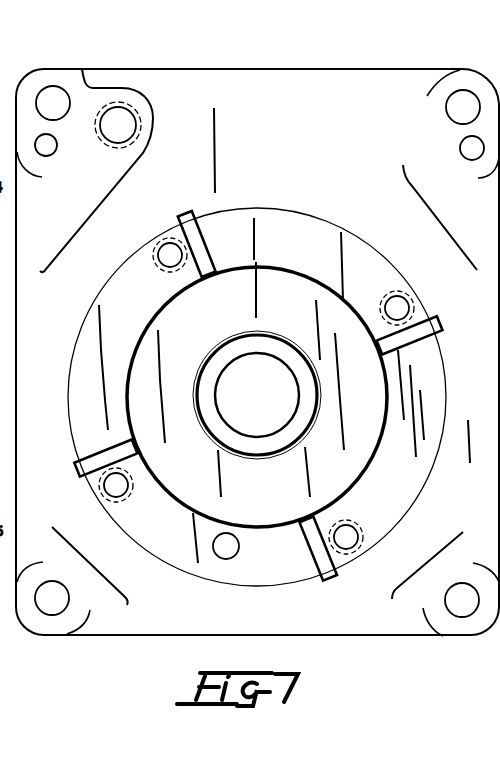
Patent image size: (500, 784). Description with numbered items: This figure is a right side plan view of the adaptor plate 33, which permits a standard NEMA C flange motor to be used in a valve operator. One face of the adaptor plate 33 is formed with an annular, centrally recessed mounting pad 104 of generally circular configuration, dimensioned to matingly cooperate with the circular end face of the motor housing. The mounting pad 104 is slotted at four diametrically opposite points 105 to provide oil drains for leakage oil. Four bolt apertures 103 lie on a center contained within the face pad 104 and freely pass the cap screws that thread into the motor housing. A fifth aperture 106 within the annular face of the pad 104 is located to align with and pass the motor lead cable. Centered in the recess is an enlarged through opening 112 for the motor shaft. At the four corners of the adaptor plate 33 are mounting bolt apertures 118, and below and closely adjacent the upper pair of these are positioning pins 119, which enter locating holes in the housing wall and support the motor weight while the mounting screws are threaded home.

The adaptor plate 33 is at (366, 638).
The mounting pad 104 is at (252, 223).
The slots 105 is at (192, 212).
The bolt apertures 103 is at (164, 261).
The fifth aperture 106 is at (231, 536).
The through opening 112 is at (253, 360).
The mounting bolt apertures 118 is at (58, 98).
The positioning pins 119 is at (50, 145).